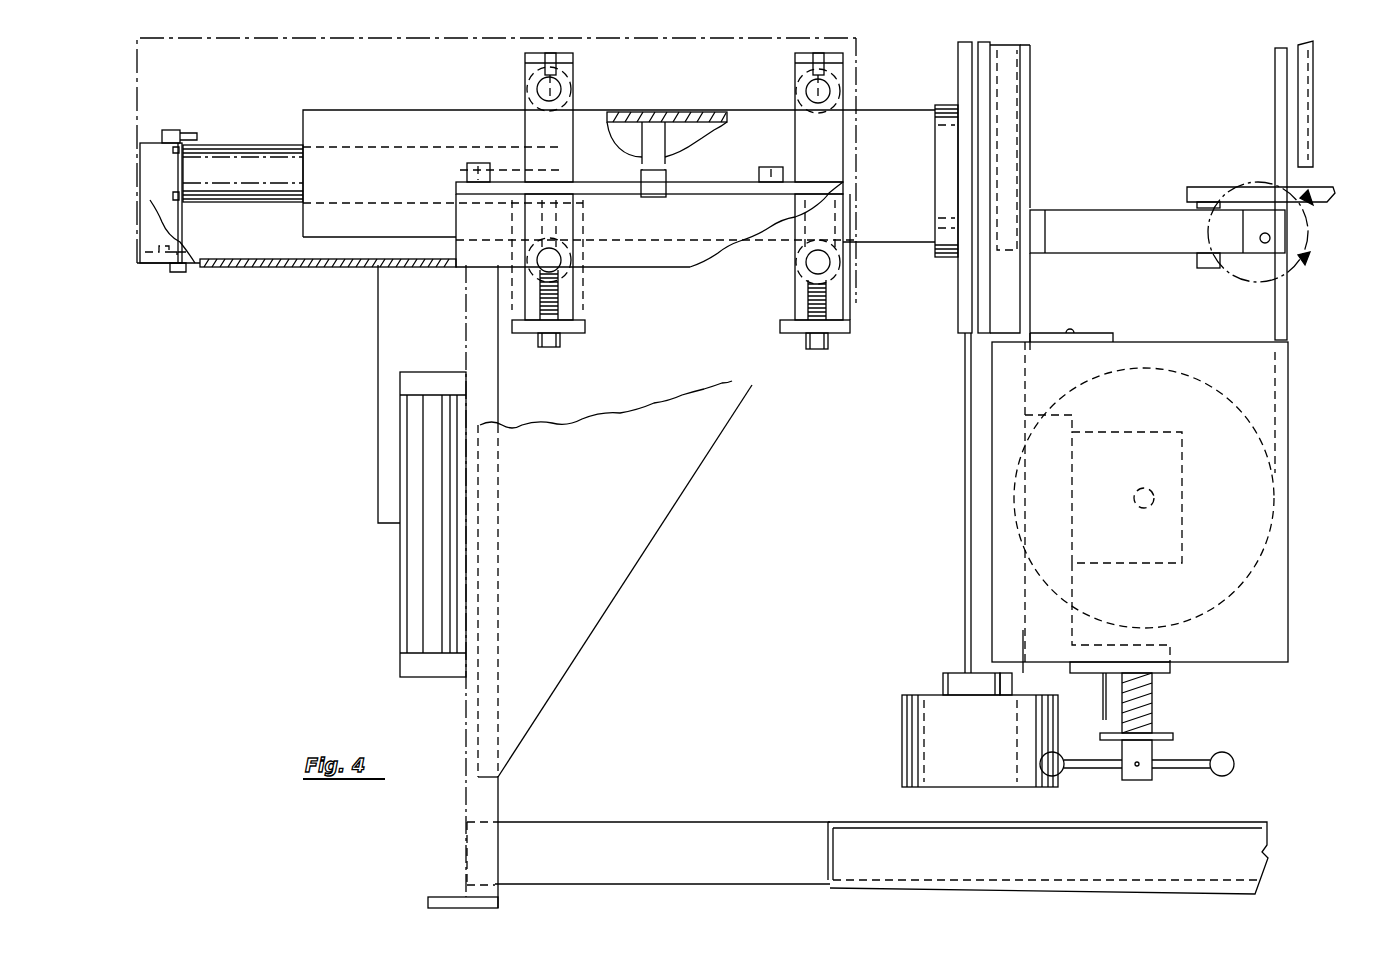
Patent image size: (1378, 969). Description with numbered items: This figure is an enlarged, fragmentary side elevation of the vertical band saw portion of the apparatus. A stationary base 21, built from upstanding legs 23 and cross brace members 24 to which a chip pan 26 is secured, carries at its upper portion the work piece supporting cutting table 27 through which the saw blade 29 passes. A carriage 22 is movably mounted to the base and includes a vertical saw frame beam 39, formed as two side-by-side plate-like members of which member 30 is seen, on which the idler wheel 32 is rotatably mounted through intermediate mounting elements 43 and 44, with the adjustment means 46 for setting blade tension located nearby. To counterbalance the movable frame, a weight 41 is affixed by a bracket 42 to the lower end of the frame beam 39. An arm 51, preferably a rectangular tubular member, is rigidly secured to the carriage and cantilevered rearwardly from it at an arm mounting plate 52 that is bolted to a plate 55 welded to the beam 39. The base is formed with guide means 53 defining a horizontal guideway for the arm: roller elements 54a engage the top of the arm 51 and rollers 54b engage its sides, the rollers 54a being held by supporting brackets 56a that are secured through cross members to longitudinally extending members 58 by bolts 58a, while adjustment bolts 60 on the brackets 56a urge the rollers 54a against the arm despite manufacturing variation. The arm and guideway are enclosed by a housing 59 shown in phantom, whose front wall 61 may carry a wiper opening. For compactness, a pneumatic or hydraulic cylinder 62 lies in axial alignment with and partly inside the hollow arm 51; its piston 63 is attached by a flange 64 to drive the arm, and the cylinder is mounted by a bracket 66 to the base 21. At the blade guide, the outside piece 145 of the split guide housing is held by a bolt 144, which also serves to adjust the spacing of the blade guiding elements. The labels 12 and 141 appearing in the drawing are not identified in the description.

The section line 12 is at (1266, 232).
The stationary base portion 21 is at (375, 559).
The carriage 22 is at (940, 509).
The upstanding legs 23 is at (498, 395).
The cross brace members 24 is at (566, 822).
The chip pan 26 is at (855, 822).
The cutting table 27 is at (1208, 187).
The saw blade 29 is at (1288, 305).
The plate-like member 30 is at (990, 398).
The idler wheel 32 is at (1248, 578).
The vertical saw frame 39 is at (963, 366).
The weight 41 is at (905, 728).
The bracket 42 is at (963, 677).
The intermediate mounting element 43 is at (1163, 567).
The intermediate mounting element 44 is at (1075, 418).
The adjustment means 46 is at (1157, 706).
The arm 51 is at (394, 108).
The arm mounting plate 52 is at (946, 259).
The guide means 53 is at (600, 68).
The roller elements 54a is at (572, 85).
The rollers 54b is at (467, 169).
The plate 55 is at (965, 90).
The supporting brackets 56a is at (545, 128).
The longitudinal extending members 58 is at (731, 196).
The bolts 58a is at (566, 318).
The housing 59 is at (135, 93).
The bolts 60 is at (528, 68).
The front wall 61 is at (862, 63).
The cylinder 62 is at (258, 146).
The piston 63 is at (620, 170).
The flange 64 is at (688, 112).
The bracket 66 is at (315, 268).
The arm 141 is at (1288, 237).
The bolt 144 is at (1264, 244).
The outside piece 145 is at (1248, 238).